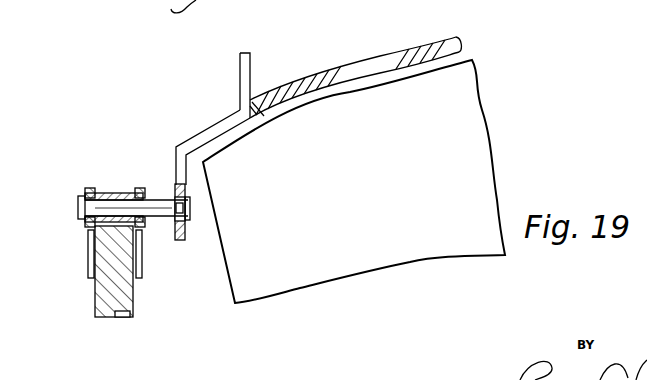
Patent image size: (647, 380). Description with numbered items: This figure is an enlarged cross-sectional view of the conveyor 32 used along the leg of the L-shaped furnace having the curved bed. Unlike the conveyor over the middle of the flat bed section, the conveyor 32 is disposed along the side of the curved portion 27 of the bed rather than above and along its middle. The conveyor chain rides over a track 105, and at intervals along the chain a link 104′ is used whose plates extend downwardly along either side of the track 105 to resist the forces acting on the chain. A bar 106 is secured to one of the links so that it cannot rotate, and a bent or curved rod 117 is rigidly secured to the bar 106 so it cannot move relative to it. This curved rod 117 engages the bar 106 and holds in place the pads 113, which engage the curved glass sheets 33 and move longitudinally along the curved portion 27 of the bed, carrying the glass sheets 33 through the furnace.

The curved portion of the bed 27 is at (463, 167).
The glass sheets 33 is at (402, 50).
The pads 113 is at (249, 70).
The bent or curved rod 117 is at (199, 137).
The bar 106 is at (162, 202).
The conveyor 32 is at (105, 181).
The track 105 is at (118, 317).
The link 104′ is at (91, 279).